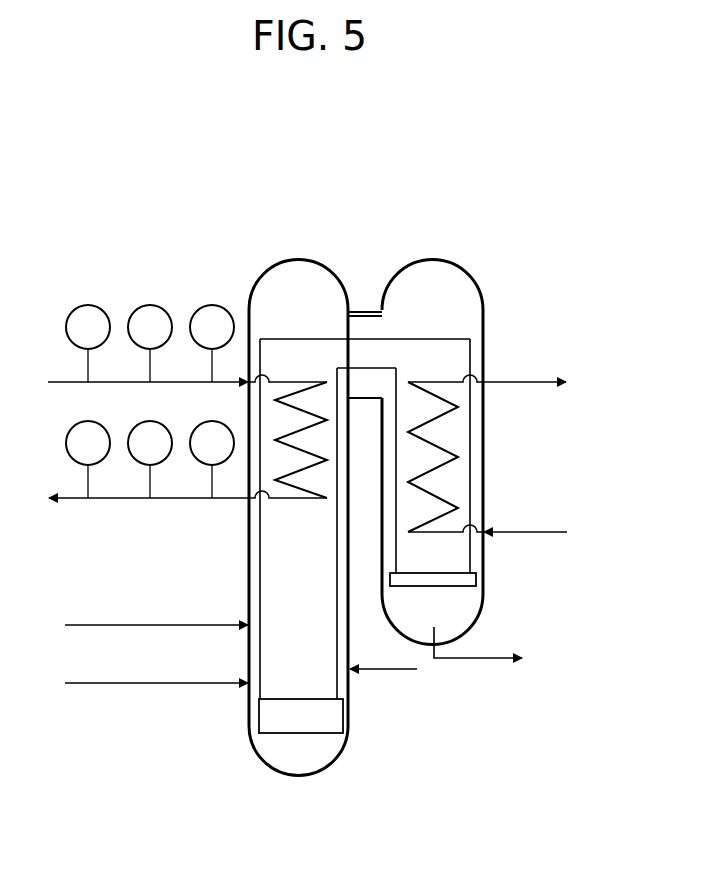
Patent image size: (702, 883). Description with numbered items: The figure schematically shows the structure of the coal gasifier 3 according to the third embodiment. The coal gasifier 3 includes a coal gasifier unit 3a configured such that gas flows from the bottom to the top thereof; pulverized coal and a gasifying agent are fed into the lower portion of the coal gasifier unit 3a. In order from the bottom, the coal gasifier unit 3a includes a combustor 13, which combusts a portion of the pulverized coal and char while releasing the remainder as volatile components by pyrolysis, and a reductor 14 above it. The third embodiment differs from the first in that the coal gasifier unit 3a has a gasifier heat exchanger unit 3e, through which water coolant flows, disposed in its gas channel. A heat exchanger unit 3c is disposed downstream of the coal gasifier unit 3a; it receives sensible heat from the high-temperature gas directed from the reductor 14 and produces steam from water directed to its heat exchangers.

The coal gasifier 3 is at (488, 241).
The coal gasifier unit 3a is at (252, 294).
The heat exchanger unit 3c is at (445, 446).
The gasifier heat exchanger unit 3e is at (297, 492).
The combustor 13 is at (283, 652).
The reductor 14 is at (298, 364).